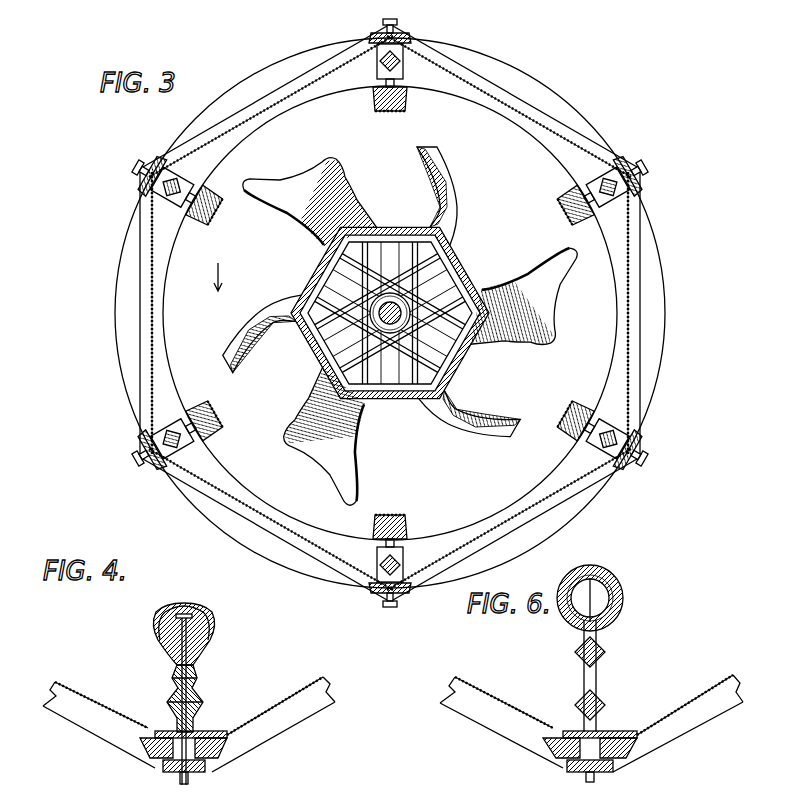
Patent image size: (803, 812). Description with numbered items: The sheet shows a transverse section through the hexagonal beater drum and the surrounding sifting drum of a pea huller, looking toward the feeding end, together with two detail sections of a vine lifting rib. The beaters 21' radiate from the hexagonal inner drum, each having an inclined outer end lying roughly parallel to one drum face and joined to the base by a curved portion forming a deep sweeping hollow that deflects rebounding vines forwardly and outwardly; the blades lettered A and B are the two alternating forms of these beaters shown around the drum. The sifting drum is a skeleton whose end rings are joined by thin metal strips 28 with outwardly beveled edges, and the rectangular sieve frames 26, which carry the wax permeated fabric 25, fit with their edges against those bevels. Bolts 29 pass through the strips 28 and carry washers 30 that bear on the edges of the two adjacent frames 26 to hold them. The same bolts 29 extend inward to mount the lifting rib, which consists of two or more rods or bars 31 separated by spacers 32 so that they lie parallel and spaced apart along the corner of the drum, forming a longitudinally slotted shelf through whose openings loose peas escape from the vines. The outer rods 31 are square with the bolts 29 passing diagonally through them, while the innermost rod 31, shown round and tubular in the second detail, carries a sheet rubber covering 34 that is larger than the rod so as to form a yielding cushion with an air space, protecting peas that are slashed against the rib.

In FIG. 3, the beater 21' is at (390, 319).
In FIG. 3, the wax permeated fabric 25 is at (627, 307).
In FIG. 4, the wax permeated fabric 25 is at (83, 692).
In FIG. 6, the wax permeated fabric 25 is at (670, 702).
In FIG. 3, the sieve frame 26 is at (537, 110).
In FIG. 4, the sieve frame 26 is at (97, 725).
In FIG. 6, the sieve frame 26 is at (510, 735).
In FIG. 3, the metal strip 28 is at (403, 55).
In FIG. 4, the metal strip 28 is at (203, 728).
In FIG. 6, the metal strip 28 is at (603, 733).
In FIG. 3, the bolt 29 is at (398, 30).
In FIG. 4, the bolt 29 is at (193, 707).
In FIG. 6, the bolt 29 is at (597, 772).
In FIG. 4, the washer 30 is at (173, 765).
In FIG. 6, the washer 30 is at (587, 772).
In FIG. 3, the rod 31 is at (186, 196).
In FIG. 4, the rod 31 is at (192, 690).
In FIG. 6, the rod 31 is at (583, 688).
In FIG. 3, the spacer 32 is at (188, 188).
In FIG. 4, the spacer 32 is at (173, 725).
In FIG. 6, the spacer 32 is at (603, 698).
In FIG. 3, the sheet rubber covering 34 is at (213, 212).
In FIG. 4, the sheet rubber covering 34 is at (178, 605).
In FIG. 6, the sheet rubber covering 34 is at (620, 595).
In FIG. 3, the blade A is at (310, 170).
In FIG. 3, the blade B is at (457, 197).